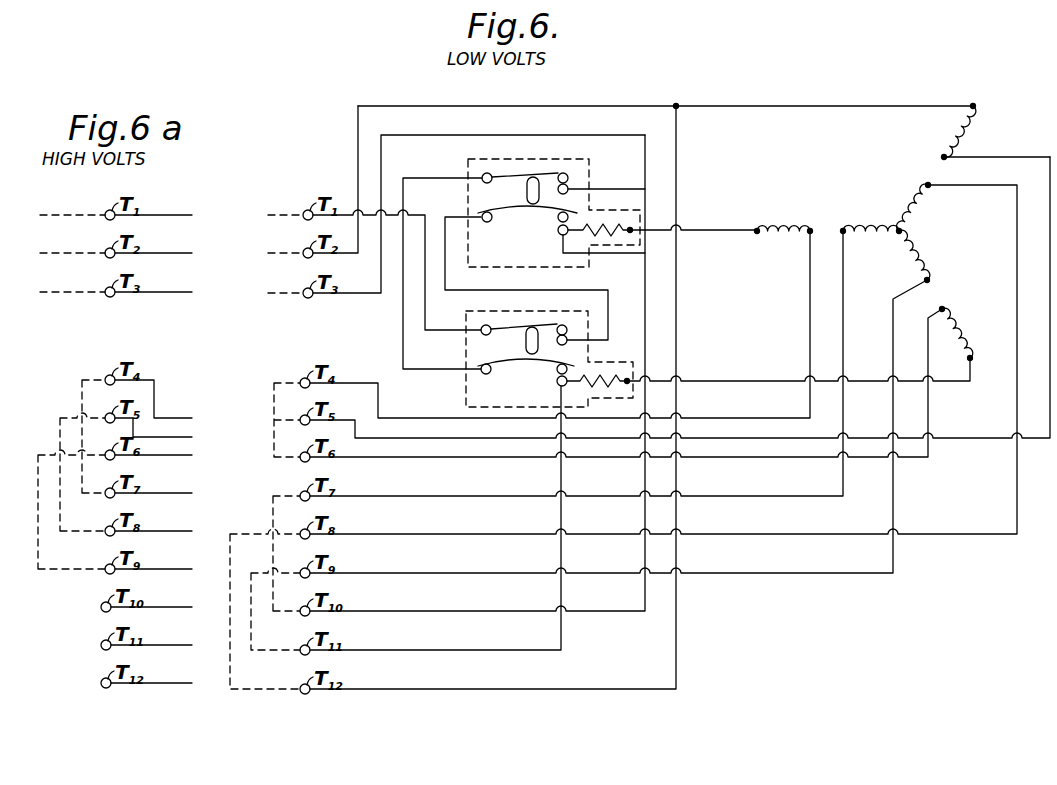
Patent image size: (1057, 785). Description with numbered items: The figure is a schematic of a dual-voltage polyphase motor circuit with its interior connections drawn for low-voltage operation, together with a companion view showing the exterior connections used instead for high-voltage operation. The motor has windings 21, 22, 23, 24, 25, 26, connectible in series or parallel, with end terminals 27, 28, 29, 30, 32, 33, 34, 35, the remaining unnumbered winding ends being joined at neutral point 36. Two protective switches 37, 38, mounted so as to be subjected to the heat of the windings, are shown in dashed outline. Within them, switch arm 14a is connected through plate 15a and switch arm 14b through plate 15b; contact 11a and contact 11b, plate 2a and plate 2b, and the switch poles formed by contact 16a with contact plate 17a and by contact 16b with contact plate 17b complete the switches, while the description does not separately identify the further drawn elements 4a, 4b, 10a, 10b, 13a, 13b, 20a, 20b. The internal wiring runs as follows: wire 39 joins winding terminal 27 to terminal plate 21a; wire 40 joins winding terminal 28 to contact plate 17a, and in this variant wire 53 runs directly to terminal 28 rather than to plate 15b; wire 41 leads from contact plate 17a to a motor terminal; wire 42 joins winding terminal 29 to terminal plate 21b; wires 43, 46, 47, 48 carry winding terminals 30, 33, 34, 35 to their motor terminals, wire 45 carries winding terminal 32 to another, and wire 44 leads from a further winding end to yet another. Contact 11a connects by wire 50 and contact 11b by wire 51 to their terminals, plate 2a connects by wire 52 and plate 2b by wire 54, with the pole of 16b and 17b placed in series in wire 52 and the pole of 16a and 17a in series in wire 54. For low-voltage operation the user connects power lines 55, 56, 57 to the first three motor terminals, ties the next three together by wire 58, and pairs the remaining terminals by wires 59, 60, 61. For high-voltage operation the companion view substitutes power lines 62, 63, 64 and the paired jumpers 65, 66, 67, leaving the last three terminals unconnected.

In FIG. 6, the plate 2a is at (486, 222).
In FIG. 6, the plate 2b is at (486, 374).
In FIG. 6, the movable switch blade 4a is at (518, 208).
In FIG. 6, the movable switch blade 4b is at (509, 358).
In FIG. 6, the contact 10a is at (558, 217).
In FIG. 6, the contact 10b is at (557, 370).
In FIG. 6, the contact 11a is at (558, 233).
In FIG. 6, the contact 11b is at (557, 384).
In FIG. 6, the contact bar 13a is at (527, 194).
In FIG. 6, the contact bar 13b is at (526, 341).
In FIG. 6, the switch arm 14a is at (529, 177).
In FIG. 6, the switch arm 14b is at (528, 327).
In FIG. 6, the plate 15a is at (487, 173).
In FIG. 6, the plate 15b is at (484, 325).
In FIG. 6, the switch pole 16a is at (568, 178).
In FIG. 6, the switch pole 16b is at (567, 330).
In FIG. 6, the contact plate 17a is at (568, 190).
In FIG. 6, the contact plate 17b is at (567, 341).
In FIG. 6, the resistor 20a is at (632, 233).
In FIG. 6, the resistor 20b is at (606, 390).
In FIG. 6, the terminal plate 21a is at (632, 229).
In FIG. 6, the terminal plate 21b is at (629, 380).
In FIG. 6, the winding 21 is at (797, 224).
In FIG. 6, the winding 22 is at (961, 133).
In FIG. 6, the winding 23 is at (965, 345).
In FIG. 6, the winding 24 is at (885, 226).
In FIG. 6, the winding 25 is at (917, 213).
In FIG. 6, the winding 26 is at (921, 257).
In FIG. 6, the winding end terminal 27 is at (752, 238).
In FIG. 6, the winding end terminal 28 is at (975, 106).
In FIG. 6, the winding end terminal 29 is at (973, 358).
In FIG. 6, the winding end terminal 30 is at (811, 229).
In FIG. 6, the winding end terminal 32 is at (946, 308).
In FIG. 6, the winding end terminal 33 is at (842, 229).
In FIG. 6, the winding end terminal 34 is at (928, 185).
In FIG. 6, the winding end terminal 35 is at (931, 282).
In FIG. 6, the neutral point 36 is at (905, 235).
In FIG. 6, the protective switch 37 is at (462, 166).
In FIG. 6, the protective switch 38 is at (463, 379).
In FIG. 6, the wire 39 is at (718, 230).
In FIG. 6, the wire 40 is at (840, 106).
In FIG. 6, the wire 41 is at (681, 292).
In FIG. 6A, the wire 41 is at (165, 684).
In FIG. 6, the wire 42 is at (753, 381).
In FIG. 6, the wire 43 is at (810, 292).
In FIG. 6A, the wire 43 is at (165, 419).
In FIG. 6, the wire 44 is at (1018, 157).
In FIG. 6A, the wire 44 is at (172, 438).
In FIG. 6, the wire 45 is at (931, 407).
In FIG. 6A, the wire 45 is at (172, 456).
In FIG. 6, the wire 46 is at (843, 278).
In FIG. 6A, the wire 46 is at (169, 494).
In FIG. 6, the wire 47 is at (1017, 235).
In FIG. 6A, the wire 47 is at (169, 532).
In FIG. 6, the wire 48 is at (893, 331).
In FIG. 6A, the wire 48 is at (169, 570).
In FIG. 6, the wire 50 is at (645, 273).
In FIG. 6A, the wire 50 is at (165, 608).
In FIG. 6, the wire 51 is at (565, 476).
In FIG. 6A, the wire 51 is at (165, 646).
In FIG. 6, the wire 52 is at (418, 215).
In FIG. 6A, the wire 52 is at (172, 215).
In FIG. 6, the wire 53 is at (358, 156).
In FIG. 6A, the wire 53 is at (164, 253).
In FIG. 6, the wire 54 is at (604, 136).
In FIG. 6A, the wire 54 is at (164, 292).
In FIG. 6, the low voltage polyphase power line 55 is at (290, 214).
In FIG. 6, the low voltage polyphase power line 56 is at (290, 252).
In FIG. 6, the low voltage polyphase power line 57 is at (290, 292).
In FIG. 6, the wire 58 is at (274, 407).
In FIG. 6, the wire 59 is at (273, 521).
In FIG. 6, the wire 60 is at (232, 571).
In FIG. 6, the wire 61 is at (266, 647).
In FIG. 6A, the high voltage polyphase power line 62 is at (88, 214).
In FIG. 6A, the high voltage polyphase power line 63 is at (88, 252).
In FIG. 6A, the high voltage polyphase power line 64 is at (88, 291).
In FIG. 6A, the wire 65 is at (80, 405).
In FIG. 6A, the wire 66 is at (58, 434).
In FIG. 6A, the wire 67 is at (37, 480).